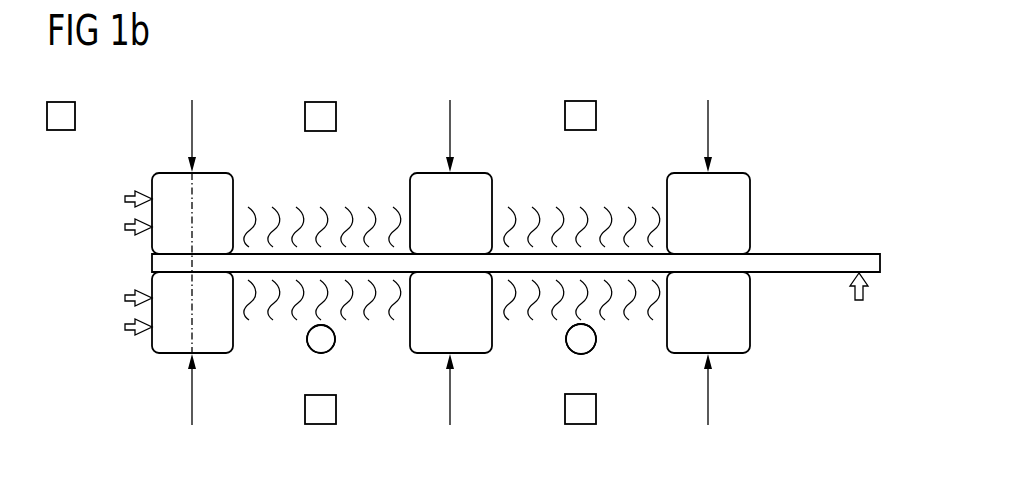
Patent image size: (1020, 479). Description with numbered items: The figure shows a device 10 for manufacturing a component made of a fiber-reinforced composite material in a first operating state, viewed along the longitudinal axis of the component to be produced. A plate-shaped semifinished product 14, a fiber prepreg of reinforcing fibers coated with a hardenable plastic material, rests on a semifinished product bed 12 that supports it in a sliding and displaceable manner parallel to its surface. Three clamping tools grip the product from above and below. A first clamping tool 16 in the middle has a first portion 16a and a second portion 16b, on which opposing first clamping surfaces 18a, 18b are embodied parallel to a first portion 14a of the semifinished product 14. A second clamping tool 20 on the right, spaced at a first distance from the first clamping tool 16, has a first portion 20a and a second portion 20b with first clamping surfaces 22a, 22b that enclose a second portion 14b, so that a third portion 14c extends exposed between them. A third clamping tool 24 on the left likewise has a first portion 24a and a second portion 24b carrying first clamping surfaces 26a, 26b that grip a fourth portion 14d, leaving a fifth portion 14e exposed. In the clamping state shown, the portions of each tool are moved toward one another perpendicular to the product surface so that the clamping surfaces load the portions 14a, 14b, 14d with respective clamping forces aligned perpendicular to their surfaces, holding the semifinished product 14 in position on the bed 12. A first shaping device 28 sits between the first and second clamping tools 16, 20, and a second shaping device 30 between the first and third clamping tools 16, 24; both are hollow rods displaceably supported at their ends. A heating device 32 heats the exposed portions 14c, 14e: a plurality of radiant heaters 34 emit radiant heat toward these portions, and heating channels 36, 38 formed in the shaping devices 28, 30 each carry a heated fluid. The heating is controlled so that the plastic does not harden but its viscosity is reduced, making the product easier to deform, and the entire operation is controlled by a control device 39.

The device 10 is at (745, 95).
The semifinished product bed 12 is at (860, 318).
The semifinished product 14 is at (868, 253).
The first portion of the semifinished product 14a is at (447, 264).
The second portion of the semifinished product 14b is at (704, 253).
The third portion of the semifinished product 14c is at (590, 252).
The fourth portion of the semifinished product 14d is at (213, 258).
The fifth portion of the semifinished product 14e is at (331, 262).
The first clamping tool 16 is at (497, 163).
The first portion of the first clamping tool 16a is at (483, 186).
The second portion of the first clamping tool 16b is at (482, 353).
The first clamping surface of the first clamping tool 18a is at (440, 252).
The first clamping surface of the first clamping tool 18b is at (462, 273).
The second clamping tool 20 is at (766, 160).
The first portion of the second clamping tool 20a is at (744, 186).
The second portion of the second clamping tool 20b is at (744, 338).
The first clamping surface of the second clamping tool 22a is at (748, 258).
The first clamping surface of the second clamping tool 22b is at (748, 266).
The third clamping tool 24 is at (237, 164).
The first portion of the third clamping tool 24a is at (226, 186).
The second portion of the third clamping tool 24b is at (172, 353).
The first clamping surface of the third clamping tool 26a is at (168, 264).
The first clamping surface of the third clamping tool 26b is at (158, 264).
The first shaping device 28 is at (566, 339).
The second shaping device 30 is at (306, 339).
The heating device 32 is at (302, 360).
The radiant heaters 34 is at (322, 116).
The heating channel 36 is at (583, 337).
The heating channel 38 is at (322, 337).
The control device 39 is at (63, 118).